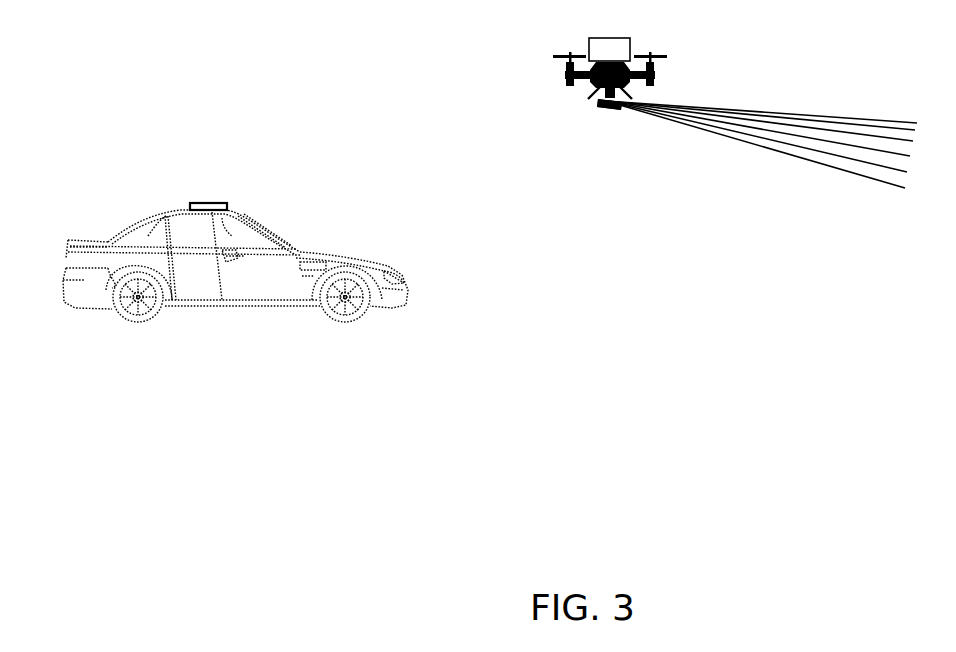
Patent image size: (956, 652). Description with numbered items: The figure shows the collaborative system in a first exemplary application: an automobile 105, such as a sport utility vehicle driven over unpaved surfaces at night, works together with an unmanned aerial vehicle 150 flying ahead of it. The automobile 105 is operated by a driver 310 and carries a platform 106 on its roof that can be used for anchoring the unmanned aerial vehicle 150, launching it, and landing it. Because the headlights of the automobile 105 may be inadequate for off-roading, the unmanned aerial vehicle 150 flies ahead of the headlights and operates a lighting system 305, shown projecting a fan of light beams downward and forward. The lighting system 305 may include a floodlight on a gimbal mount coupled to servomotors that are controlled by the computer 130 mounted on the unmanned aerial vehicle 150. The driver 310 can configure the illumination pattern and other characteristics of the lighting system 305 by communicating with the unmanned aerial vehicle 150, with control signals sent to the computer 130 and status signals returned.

The automobile 105 is at (72, 199).
The platform 106 is at (180, 198).
The driver 310 is at (236, 221).
The unmanned aerial vehicle 150 is at (524, 59).
The computer 130 is at (609, 49).
The lighting system 305 is at (617, 104).